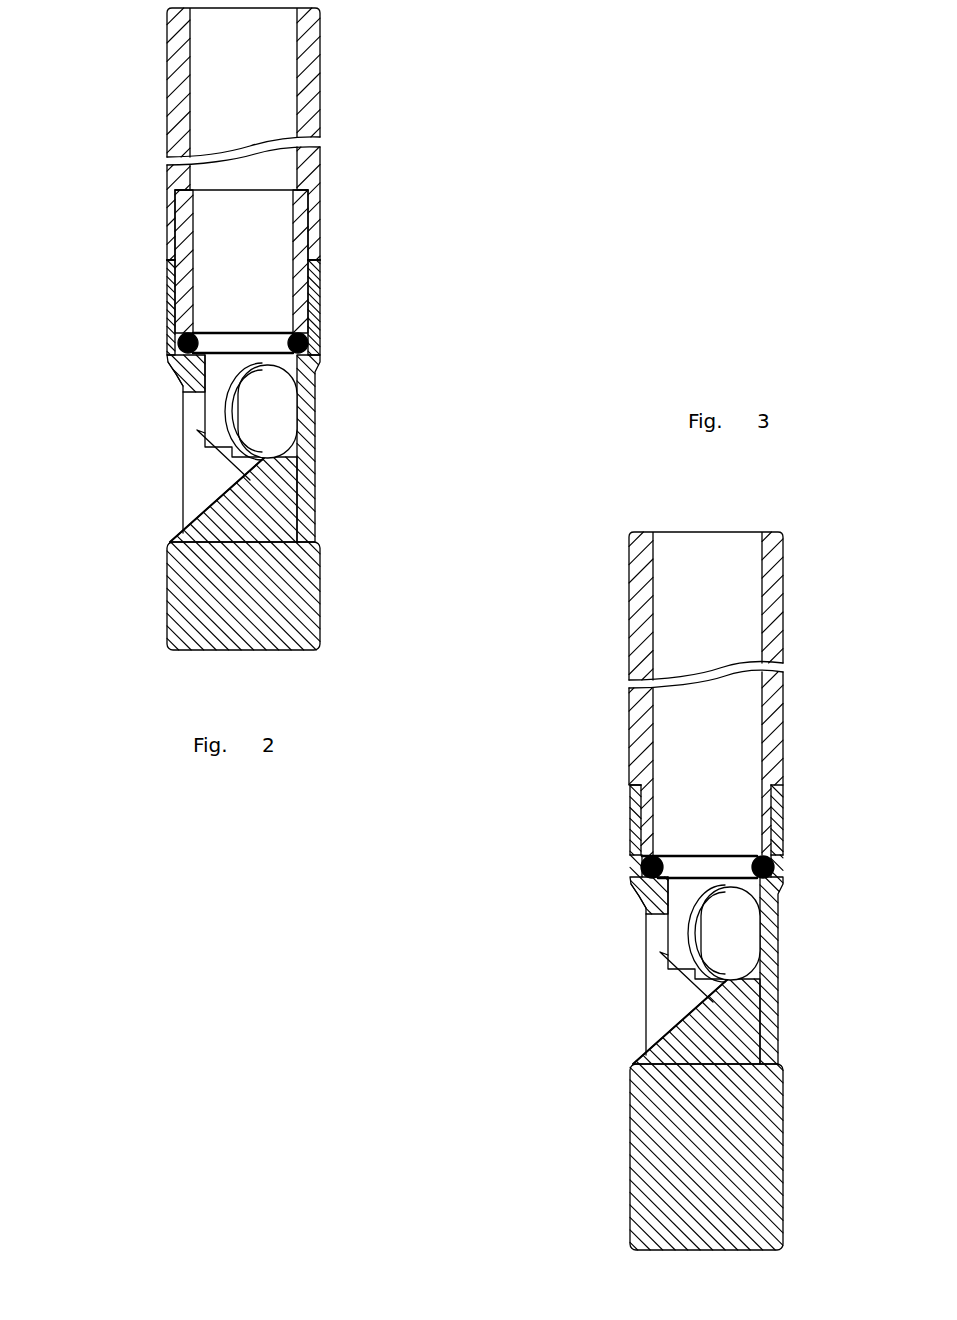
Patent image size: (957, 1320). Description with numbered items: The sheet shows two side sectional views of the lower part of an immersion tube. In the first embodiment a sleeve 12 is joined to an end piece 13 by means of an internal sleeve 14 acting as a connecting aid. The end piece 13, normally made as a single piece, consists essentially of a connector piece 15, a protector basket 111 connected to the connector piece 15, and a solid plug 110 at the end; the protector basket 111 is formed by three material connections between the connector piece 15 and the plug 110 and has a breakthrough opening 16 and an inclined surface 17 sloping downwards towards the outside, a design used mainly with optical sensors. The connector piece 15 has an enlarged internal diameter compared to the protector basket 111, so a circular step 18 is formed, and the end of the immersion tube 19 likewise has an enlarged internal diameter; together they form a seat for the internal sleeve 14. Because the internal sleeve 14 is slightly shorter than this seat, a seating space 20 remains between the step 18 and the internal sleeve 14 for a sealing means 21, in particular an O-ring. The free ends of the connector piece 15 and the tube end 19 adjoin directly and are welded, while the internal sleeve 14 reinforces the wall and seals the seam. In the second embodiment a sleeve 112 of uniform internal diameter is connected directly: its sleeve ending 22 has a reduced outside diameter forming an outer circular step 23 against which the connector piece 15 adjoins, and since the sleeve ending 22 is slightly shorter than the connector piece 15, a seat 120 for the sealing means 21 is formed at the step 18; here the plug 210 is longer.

In FIG. 2, the sleeve 12 is at (180, 82).
In FIG. 2, the end piece 13 is at (386, 378).
In FIG. 3, the end piece 13 is at (553, 1064).
In FIG. 2, the internal sleeve 14 is at (312, 230).
In FIG. 2, the connector piece 15 is at (315, 298).
In FIG. 3, the connector piece 15 is at (780, 827).
In FIG. 2, the breakthrough opening 16 is at (272, 410).
In FIG. 3, the breakthrough opening 16 is at (735, 960).
In FIG. 2, the inclined surface 17 is at (222, 498).
In FIG. 3, the inclined surface 17 is at (677, 1025).
In FIG. 2, the circular step 18 is at (178, 361).
In FIG. 3, the circular step 18 is at (773, 893).
In FIG. 2, the end of the immersion tube 19 is at (180, 222).
In FIG. 2, the seating space 20 is at (280, 343).
In FIG. 2, the sealing means 21 is at (303, 343).
In FIG. 3, the sealing means 21 is at (776, 874).
In FIG. 3, the sleeve ending 22 is at (763, 818).
In FIG. 3, the circular step 23 is at (632, 792).
In FIG. 2, the solid plug 110 is at (217, 502).
In FIG. 2, the protector basket 111 is at (187, 477).
In FIG. 3, the protector basket 111 is at (650, 975).
In FIG. 3, the sleeve 112 is at (770, 592).
In FIG. 3, the seat 120 is at (745, 865).
In FIG. 3, the plug 210 is at (693, 1052).